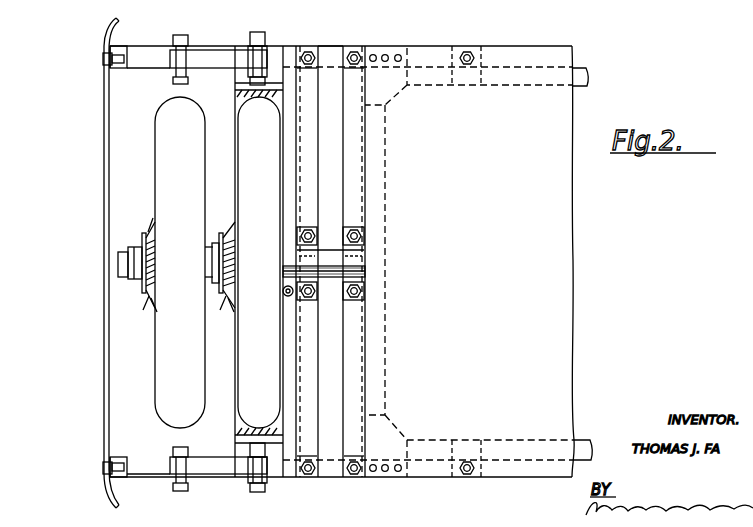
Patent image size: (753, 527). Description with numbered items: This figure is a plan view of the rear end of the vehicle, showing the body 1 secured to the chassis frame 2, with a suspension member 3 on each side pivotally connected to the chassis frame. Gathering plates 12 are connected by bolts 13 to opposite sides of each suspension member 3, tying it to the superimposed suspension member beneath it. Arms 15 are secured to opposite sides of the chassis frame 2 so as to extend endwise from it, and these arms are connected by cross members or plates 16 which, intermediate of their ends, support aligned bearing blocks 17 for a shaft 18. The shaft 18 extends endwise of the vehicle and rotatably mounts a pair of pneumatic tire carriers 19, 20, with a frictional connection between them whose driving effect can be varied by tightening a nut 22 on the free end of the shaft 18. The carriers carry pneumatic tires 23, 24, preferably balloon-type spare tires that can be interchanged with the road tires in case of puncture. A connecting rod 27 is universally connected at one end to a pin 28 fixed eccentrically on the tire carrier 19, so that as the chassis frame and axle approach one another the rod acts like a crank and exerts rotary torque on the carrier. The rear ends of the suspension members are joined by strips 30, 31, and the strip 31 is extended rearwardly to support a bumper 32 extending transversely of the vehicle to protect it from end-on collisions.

The body 1 is at (465, 239).
The chassis frame 2 is at (587, 79).
The suspension member 3 is at (303, 53).
The gathering plate 12 is at (266, 70).
The bolt 13 is at (260, 32).
The arm 15 is at (333, 56).
The cross member 16 is at (305, 165).
The bearing block 17 is at (341, 278).
The shaft 18 is at (330, 241).
The pneumatic tire carrier 19 is at (225, 310).
The pneumatic tire carrier 20 is at (140, 276).
The nut 22 is at (119, 260).
The pneumatic tire 23 is at (238, 176).
The pneumatic tire 24 is at (152, 166).
The connecting rod 27 is at (288, 298).
The pin 28 is at (283, 290).
The strip 30 is at (214, 70).
The strip 31 is at (221, 40).
The bumper 32 is at (101, 112).